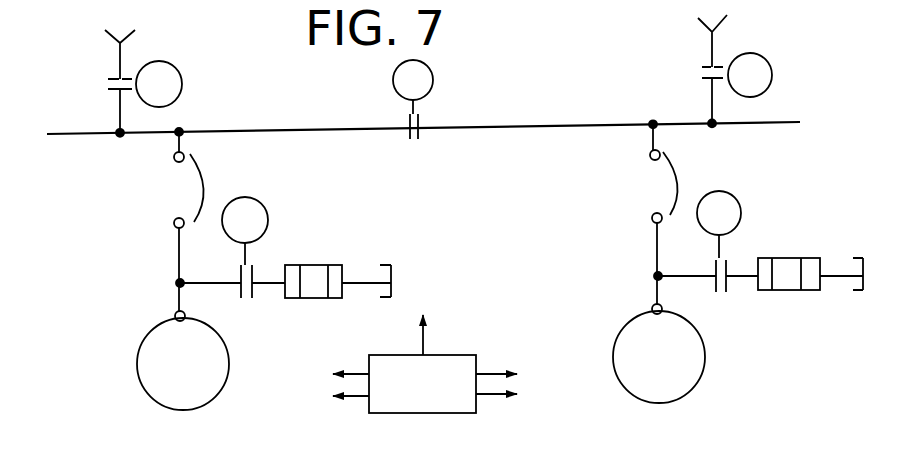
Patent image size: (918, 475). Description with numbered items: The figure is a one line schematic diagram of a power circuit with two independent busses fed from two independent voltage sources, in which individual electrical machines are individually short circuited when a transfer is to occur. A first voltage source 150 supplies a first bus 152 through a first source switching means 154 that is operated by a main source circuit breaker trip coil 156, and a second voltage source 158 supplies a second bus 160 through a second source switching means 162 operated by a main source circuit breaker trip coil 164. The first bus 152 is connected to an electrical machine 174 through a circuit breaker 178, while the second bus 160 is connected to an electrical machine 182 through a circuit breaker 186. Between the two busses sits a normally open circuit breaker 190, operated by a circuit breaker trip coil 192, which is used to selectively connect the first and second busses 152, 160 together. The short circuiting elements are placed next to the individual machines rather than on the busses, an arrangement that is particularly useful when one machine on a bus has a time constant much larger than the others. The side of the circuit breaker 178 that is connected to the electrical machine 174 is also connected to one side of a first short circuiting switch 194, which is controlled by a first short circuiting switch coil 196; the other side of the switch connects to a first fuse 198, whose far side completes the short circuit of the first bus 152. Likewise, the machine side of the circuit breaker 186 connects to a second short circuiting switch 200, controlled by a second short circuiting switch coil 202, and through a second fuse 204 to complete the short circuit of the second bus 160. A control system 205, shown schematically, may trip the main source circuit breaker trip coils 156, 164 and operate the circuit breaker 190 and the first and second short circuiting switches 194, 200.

The first voltage source 150 is at (124, 43).
The first bus 152 is at (95, 133).
The first source switching means 154 is at (113, 79).
The main source circuit breaker trip coil 156 is at (143, 66).
The second voltage source 158 is at (709, 33).
The second bus 160 is at (757, 122).
The second source switching means 162 is at (700, 67).
The main source circuit breaker trip coil 164 is at (770, 68).
The electrical machine 174 is at (152, 400).
The circuit breaker 178 is at (205, 195).
The electrical machine 182 is at (690, 390).
The circuit breaker 186 is at (677, 182).
The normally open circuit breaker 190 is at (420, 118).
The circuit breaker trip coil 192 is at (433, 80).
The first short circuiting switch 194 is at (248, 300).
The first short circuiting switch coil 196 is at (268, 218).
The first fuse 198 is at (305, 265).
The second short circuiting switch 200 is at (722, 294).
The second short circuiting switch coil 202 is at (735, 207).
The second fuse 204 is at (780, 258).
The control system 205 is at (448, 413).